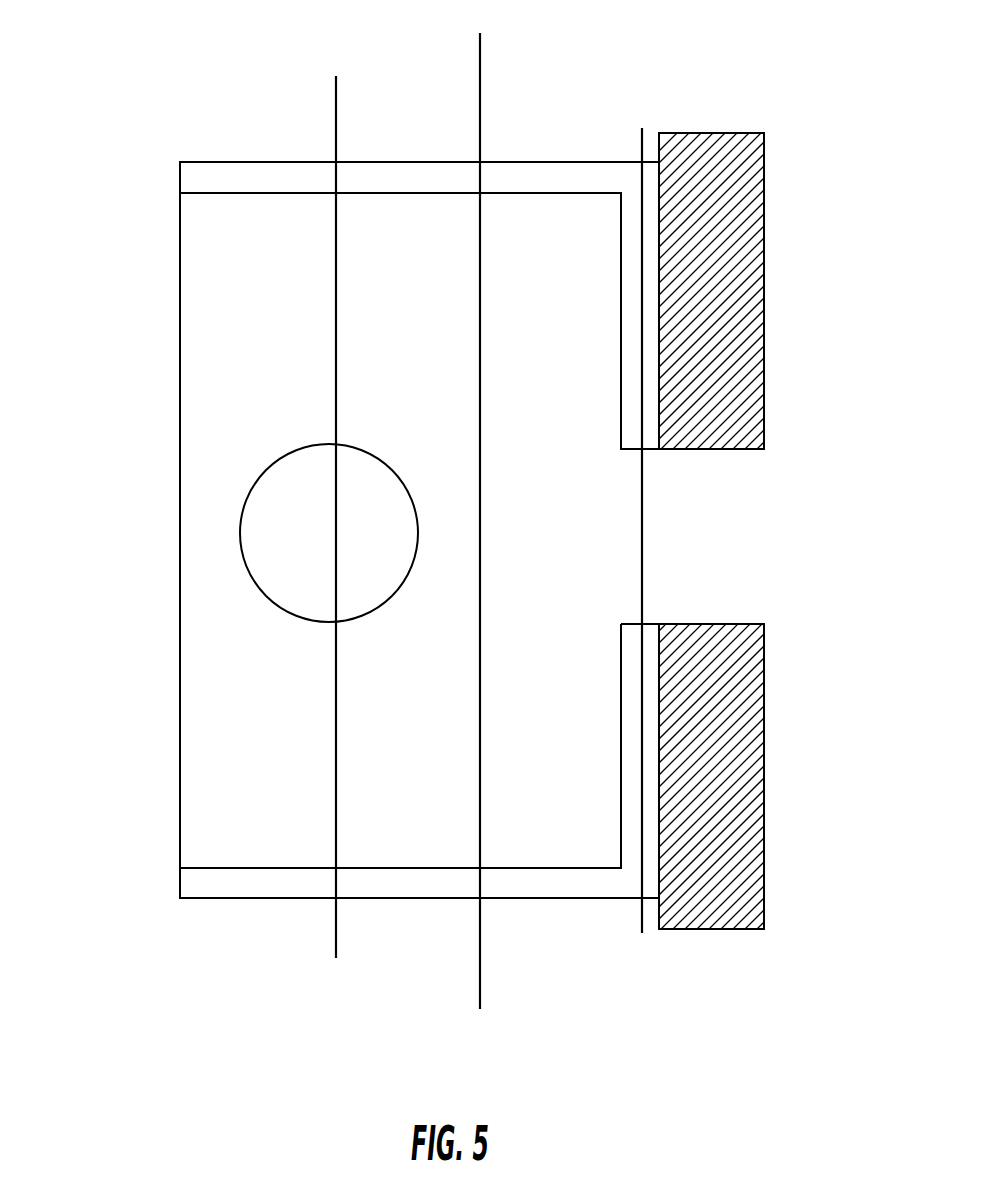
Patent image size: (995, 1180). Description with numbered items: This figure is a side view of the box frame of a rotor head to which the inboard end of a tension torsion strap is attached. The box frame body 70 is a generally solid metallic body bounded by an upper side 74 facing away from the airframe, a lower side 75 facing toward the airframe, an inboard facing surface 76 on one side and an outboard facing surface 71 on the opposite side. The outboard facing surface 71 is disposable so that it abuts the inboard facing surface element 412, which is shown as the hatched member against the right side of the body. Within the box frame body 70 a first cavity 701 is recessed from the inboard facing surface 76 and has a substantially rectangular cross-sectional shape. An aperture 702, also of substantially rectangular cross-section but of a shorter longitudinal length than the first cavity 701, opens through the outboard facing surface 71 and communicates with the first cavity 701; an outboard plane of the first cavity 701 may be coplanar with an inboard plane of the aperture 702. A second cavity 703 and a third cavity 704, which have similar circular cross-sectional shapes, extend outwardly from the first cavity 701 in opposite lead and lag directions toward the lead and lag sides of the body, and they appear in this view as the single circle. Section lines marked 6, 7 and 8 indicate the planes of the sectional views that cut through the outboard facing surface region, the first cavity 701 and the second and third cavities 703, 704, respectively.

The box frame body 70 is at (180, 162).
The upper side 74 is at (310, 162).
The lower side 75 is at (318, 898).
The inboard facing surface 76 is at (180, 319).
The outboard facing surface 71 is at (659, 183).
The first cavity 701 is at (428, 323).
The aperture 702 is at (670, 543).
The second cavity 703 is at (241, 533).
The third cavity 704 is at (250, 542).
The inboard facing surface element 412 is at (660, 245).
The section line 6- 6 is at (642, 128).
The section line 7- 7 is at (480, 33).
The section line 8- 8 is at (336, 76).